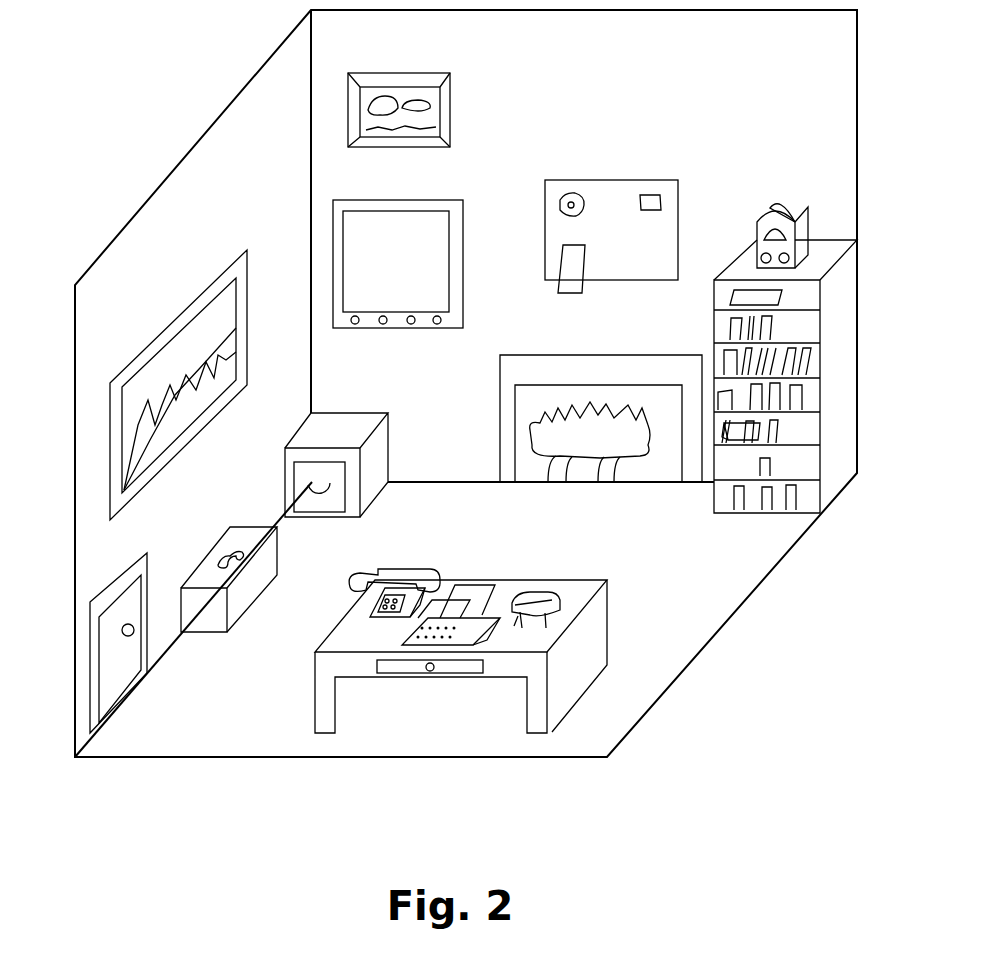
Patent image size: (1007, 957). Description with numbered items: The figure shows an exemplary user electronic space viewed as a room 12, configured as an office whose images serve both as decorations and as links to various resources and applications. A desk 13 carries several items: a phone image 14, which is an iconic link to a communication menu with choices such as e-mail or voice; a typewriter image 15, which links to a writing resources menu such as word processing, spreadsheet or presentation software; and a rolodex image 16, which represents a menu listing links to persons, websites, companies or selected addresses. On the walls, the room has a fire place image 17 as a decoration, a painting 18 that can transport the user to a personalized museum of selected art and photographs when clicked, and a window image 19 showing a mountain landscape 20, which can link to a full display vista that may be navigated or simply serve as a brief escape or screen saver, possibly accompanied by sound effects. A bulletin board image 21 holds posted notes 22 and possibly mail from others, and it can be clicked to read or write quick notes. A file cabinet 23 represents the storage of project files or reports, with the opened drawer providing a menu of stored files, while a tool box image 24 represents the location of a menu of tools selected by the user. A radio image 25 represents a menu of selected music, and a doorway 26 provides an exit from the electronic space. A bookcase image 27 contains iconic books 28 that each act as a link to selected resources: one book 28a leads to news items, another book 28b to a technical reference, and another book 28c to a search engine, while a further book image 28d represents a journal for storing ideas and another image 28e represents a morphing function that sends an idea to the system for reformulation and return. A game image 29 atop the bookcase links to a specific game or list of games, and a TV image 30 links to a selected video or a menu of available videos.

The room 12 is at (742, 686).
The desk 13 is at (600, 643).
The phone image 14 is at (356, 600).
The typewriter image 15 is at (483, 640).
The rolodex image 16 is at (565, 605).
The fire place image 17 is at (585, 356).
The painting 18 is at (418, 72).
The window image 19 is at (158, 329).
The mountain landscape 20 is at (165, 405).
The bulletin board image 21 is at (678, 181).
The notes 22 is at (581, 194).
The file cabinet 23 is at (388, 434).
The tool box image 24 is at (272, 563).
The radio image 25 is at (797, 225).
The doorway 26 is at (107, 660).
The bookcase image 27 is at (817, 393).
The iconic books 28 is at (778, 326).
The book 28a is at (790, 400).
The book 28b is at (780, 467).
The book 28c is at (793, 498).
The book image 28d is at (768, 515).
The image 28e is at (762, 430).
The game image 29 is at (781, 297).
The TV image 30 is at (450, 200).